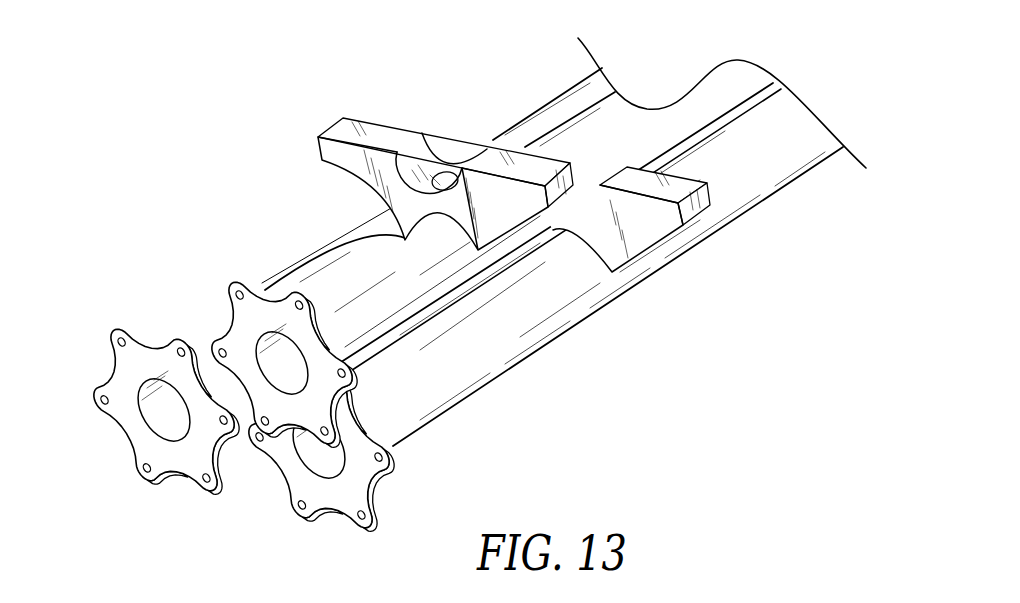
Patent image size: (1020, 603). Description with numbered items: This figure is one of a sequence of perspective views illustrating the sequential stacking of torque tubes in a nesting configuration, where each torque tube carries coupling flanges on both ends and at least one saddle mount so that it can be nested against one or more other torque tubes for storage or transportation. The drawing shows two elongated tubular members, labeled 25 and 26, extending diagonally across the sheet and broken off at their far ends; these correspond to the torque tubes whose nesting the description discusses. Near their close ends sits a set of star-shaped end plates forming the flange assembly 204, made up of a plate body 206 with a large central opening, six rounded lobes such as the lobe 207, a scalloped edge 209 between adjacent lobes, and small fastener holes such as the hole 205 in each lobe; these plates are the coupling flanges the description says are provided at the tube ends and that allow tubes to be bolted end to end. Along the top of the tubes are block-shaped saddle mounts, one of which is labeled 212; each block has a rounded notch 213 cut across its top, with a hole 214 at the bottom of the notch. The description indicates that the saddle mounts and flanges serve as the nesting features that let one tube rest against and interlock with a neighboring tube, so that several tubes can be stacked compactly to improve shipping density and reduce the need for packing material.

The rod 25 is at (332, 247).
The rod 26 is at (771, 207).
The spider plate assembly 204 is at (213, 405).
The fastener hole 205 is at (101, 485).
The spider plate 206 is at (136, 411).
The lobe 207 is at (95, 305).
The scalloped edge 209 is at (186, 318).
The block 212 is at (421, 150).
The notch 213 is at (426, 137).
The hole 214 is at (450, 172).